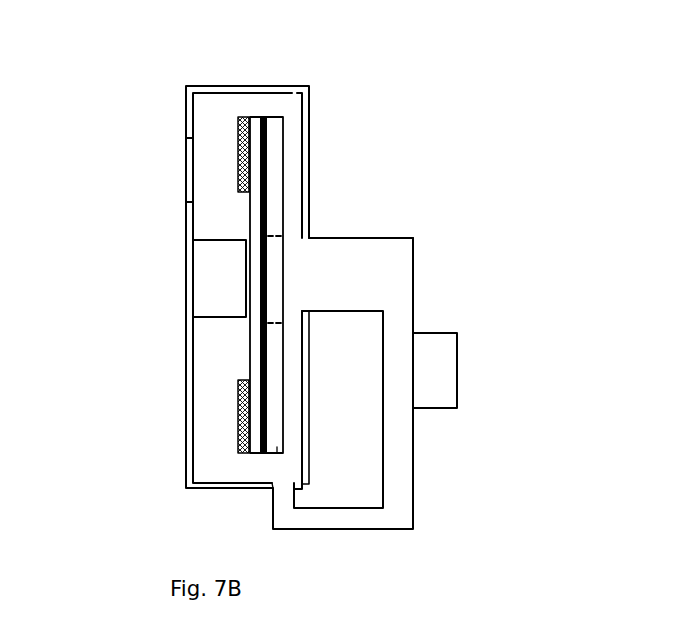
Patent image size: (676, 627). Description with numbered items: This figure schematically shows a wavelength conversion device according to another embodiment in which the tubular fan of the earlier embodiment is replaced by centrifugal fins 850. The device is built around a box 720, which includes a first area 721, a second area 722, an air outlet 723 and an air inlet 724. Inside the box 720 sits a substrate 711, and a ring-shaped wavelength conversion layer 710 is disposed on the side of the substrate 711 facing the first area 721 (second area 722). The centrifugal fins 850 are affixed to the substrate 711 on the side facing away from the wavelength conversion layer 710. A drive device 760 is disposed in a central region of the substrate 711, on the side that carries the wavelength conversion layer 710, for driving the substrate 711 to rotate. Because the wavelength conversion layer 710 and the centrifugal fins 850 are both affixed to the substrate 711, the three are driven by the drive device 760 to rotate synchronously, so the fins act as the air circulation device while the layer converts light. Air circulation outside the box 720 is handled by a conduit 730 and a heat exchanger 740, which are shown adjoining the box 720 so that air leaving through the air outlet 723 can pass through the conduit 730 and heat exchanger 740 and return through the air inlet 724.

The wavelength conversion layer 710 is at (246, 118).
The substrate 711 is at (263, 118).
The box 720 is at (192, 415).
The first area 721 is at (250, 307).
The second area 722 is at (250, 307).
The air outlet 723 is at (285, 488).
The air inlet 724 is at (297, 265).
The conduit 730 is at (397, 467).
The heat exchanger 740 is at (447, 382).
The drive device 760 is at (206, 284).
The centrifugal fins 850 is at (277, 447).